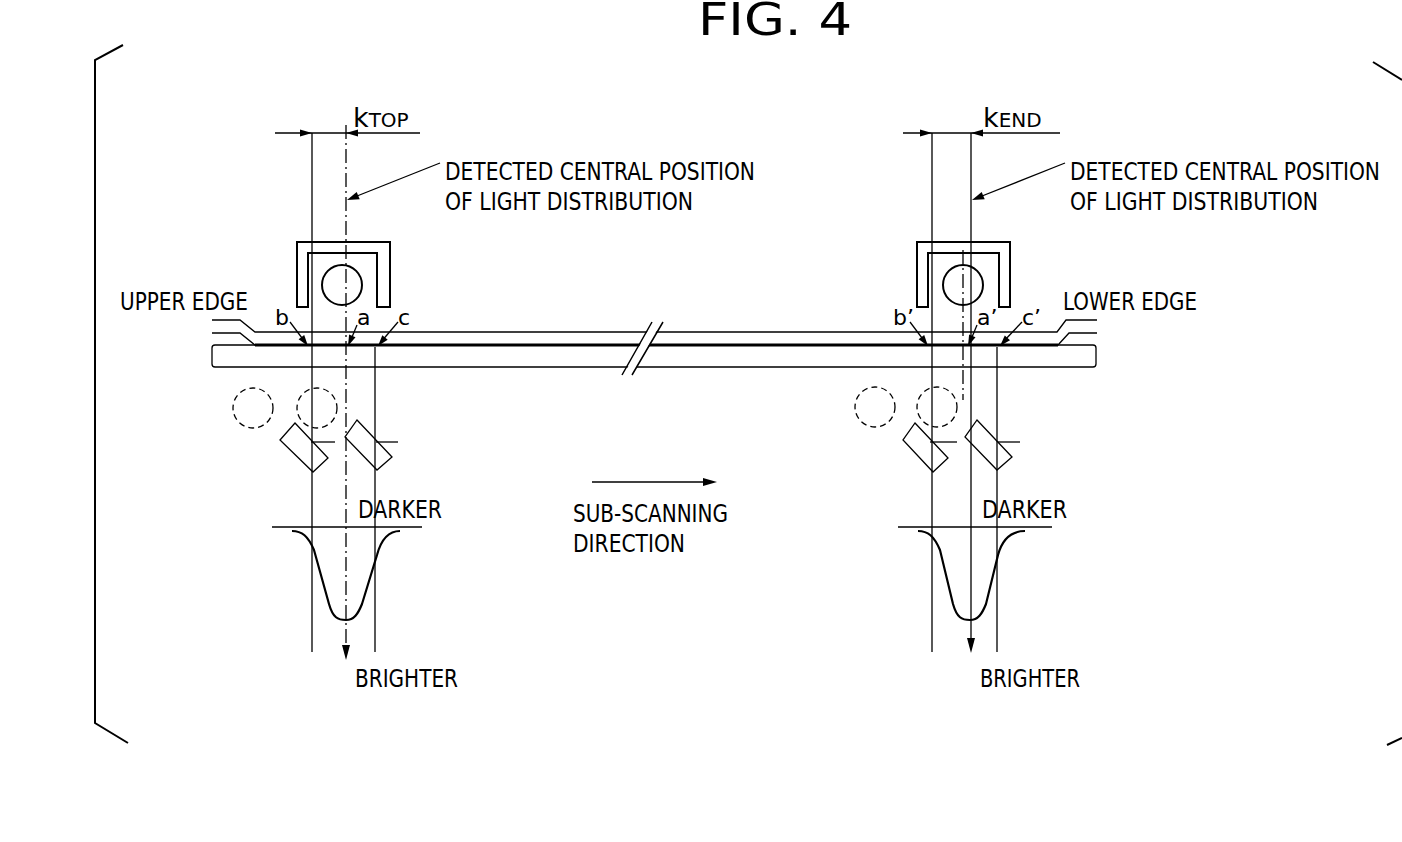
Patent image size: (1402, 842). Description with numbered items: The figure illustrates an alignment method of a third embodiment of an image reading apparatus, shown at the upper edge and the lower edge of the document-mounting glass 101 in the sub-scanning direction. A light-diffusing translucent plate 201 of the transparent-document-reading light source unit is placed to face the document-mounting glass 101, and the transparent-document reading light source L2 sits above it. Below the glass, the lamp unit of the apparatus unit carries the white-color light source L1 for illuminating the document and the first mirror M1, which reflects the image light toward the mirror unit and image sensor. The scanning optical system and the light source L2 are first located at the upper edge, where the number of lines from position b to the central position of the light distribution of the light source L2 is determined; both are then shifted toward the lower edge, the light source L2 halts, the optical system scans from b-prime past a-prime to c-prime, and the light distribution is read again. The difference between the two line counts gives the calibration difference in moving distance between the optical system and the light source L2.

The document-mounting glass 101 is at (521, 367).
The light-diffusing translucent plate 201 is at (521, 332).
The white-color light source L1 is at (240, 418).
The transparent-document reading light source L2 is at (354, 281).
The first mirror M1 is at (283, 447).